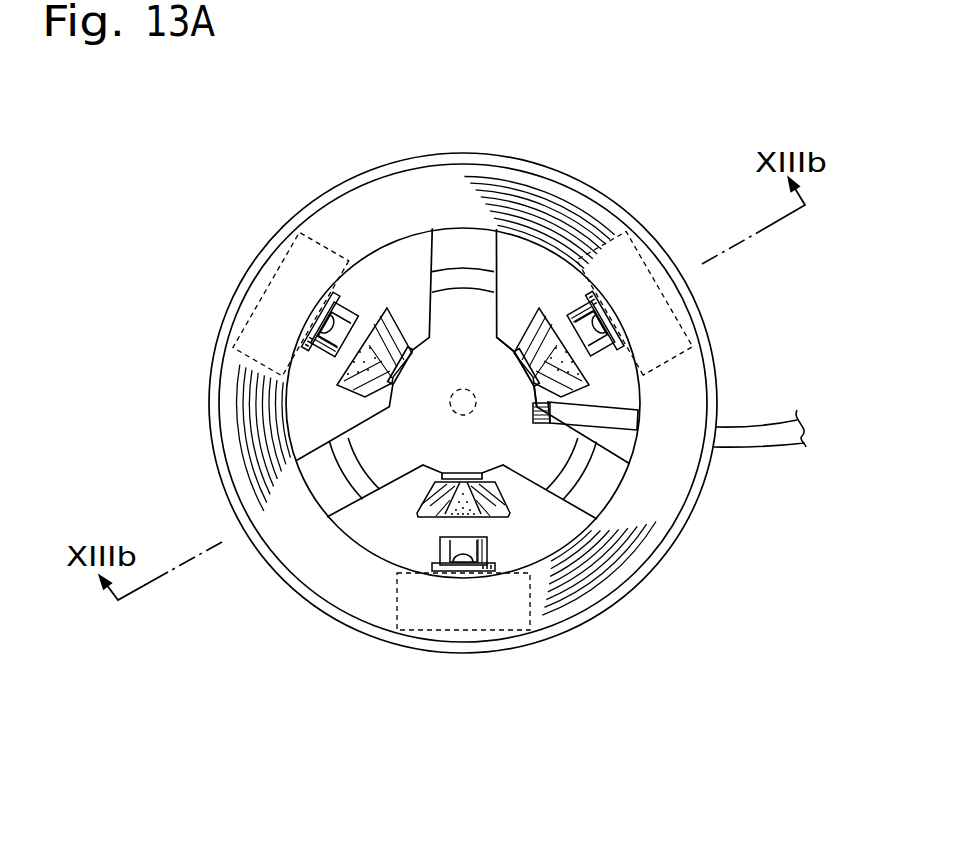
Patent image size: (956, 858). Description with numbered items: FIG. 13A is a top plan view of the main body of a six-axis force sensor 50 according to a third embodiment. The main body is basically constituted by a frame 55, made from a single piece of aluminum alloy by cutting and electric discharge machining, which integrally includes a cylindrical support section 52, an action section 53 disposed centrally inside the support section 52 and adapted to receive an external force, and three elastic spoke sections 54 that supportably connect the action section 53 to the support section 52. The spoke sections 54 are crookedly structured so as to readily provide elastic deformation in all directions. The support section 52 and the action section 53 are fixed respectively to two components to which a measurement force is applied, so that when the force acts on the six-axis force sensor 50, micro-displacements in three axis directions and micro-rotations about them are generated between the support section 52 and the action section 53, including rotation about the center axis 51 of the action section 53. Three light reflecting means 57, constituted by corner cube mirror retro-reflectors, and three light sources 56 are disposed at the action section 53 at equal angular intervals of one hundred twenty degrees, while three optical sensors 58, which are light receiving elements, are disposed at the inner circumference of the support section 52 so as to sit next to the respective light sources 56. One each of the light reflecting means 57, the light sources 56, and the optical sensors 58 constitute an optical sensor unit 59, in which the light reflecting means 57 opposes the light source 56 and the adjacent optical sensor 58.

The six-axis force sensor 50 is at (215, 249).
The center axis 51 is at (450, 397).
The cylindrical support section 52 is at (307, 562).
The action section 53 is at (478, 363).
The elastic spoke section 54 is at (447, 262).
The frame 55 is at (714, 455).
The light source 56 is at (613, 317).
The light reflecting means 57 is at (537, 320).
The optical sensor 58 is at (610, 356).
The optical sensor unit 59 is at (599, 379).